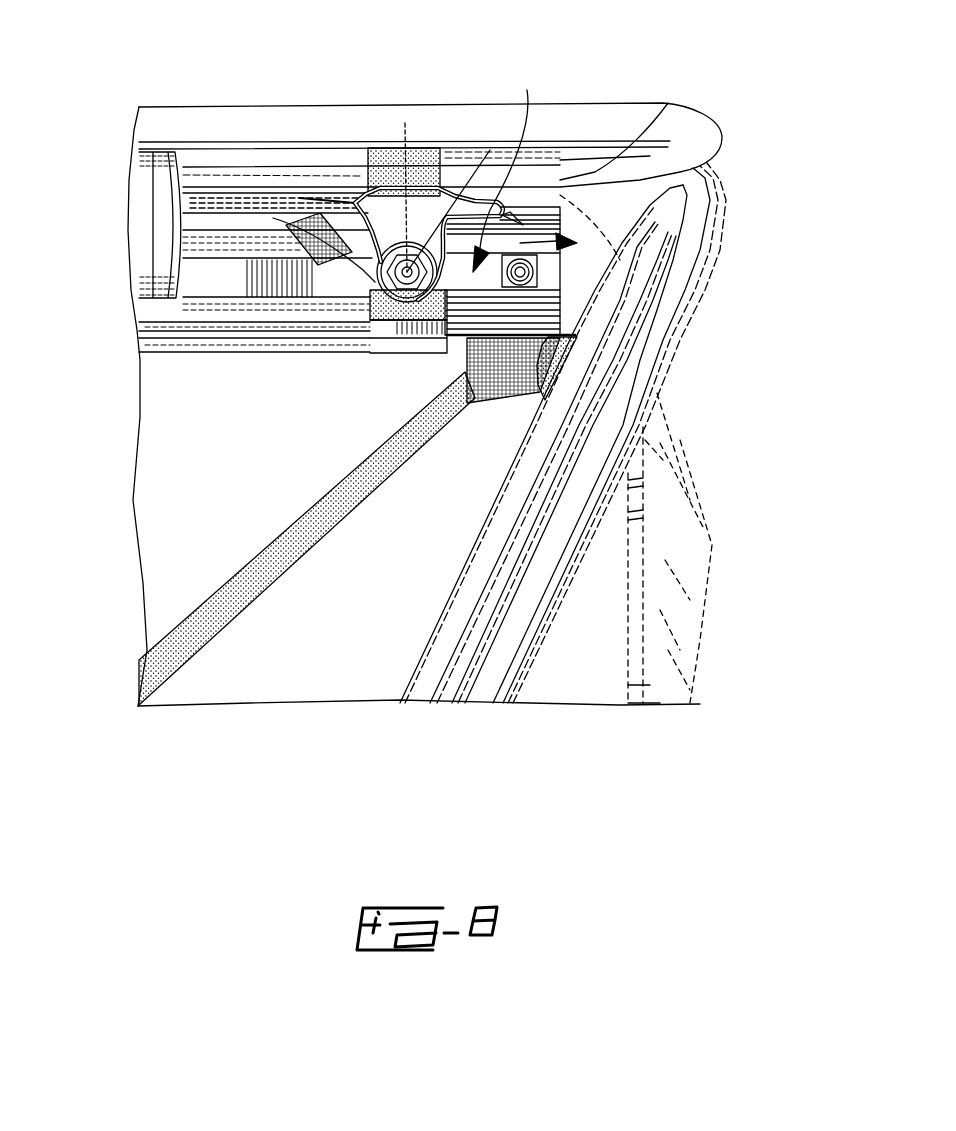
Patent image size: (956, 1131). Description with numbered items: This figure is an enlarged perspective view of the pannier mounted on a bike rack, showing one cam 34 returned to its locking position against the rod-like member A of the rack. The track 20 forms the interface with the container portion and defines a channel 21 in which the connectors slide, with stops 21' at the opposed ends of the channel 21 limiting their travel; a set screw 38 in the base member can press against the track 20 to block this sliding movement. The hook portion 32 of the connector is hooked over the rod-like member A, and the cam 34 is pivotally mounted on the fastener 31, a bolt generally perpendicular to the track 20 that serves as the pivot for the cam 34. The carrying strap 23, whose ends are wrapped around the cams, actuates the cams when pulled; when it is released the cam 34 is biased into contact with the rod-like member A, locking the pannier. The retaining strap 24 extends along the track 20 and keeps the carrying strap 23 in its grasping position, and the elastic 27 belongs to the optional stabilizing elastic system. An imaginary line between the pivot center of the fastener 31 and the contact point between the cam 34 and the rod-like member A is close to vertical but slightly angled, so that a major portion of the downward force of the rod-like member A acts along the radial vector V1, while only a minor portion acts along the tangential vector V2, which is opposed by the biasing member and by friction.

The track 20 is at (560, 253).
The channel 21 is at (580, 433).
The stops 21' is at (657, 309).
The carrying strap 23 is at (273, 218).
The retaining strap 24 is at (208, 212).
The elastic 27 is at (335, 487).
The fastener 31 is at (378, 283).
The hook portion 32 is at (392, 190).
The cam 34 is at (365, 205).
The set screw 38 is at (378, 352).
The rod-like member A is at (347, 175).
The radial vector V1 is at (510, 168).
The tangential vector V2 is at (505, 215).